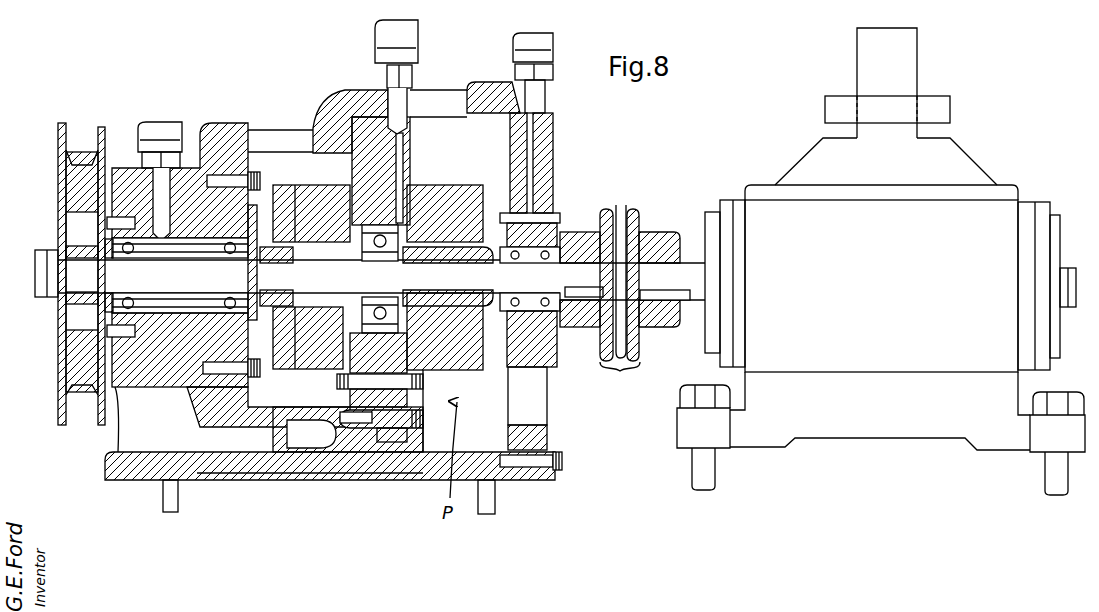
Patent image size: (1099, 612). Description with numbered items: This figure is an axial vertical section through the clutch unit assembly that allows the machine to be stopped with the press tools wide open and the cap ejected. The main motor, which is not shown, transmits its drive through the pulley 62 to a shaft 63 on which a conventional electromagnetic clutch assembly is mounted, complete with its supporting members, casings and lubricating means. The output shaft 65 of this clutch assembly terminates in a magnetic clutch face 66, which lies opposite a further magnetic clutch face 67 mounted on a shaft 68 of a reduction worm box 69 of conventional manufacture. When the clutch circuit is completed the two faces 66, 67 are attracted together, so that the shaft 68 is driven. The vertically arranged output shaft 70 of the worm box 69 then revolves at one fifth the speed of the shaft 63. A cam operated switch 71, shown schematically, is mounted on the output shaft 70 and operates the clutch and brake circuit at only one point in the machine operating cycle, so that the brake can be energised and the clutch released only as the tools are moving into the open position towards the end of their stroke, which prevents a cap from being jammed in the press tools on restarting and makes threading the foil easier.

The pulley 62 is at (64, 125).
The shaft 63 is at (191, 285).
The output shaft 65 is at (565, 273).
The magnetic clutch face 66 is at (617, 240).
The magnetic clutch face 67 is at (643, 242).
The shaft 68 is at (696, 300).
The reduction worm box 69 is at (1005, 213).
The output shaft 70 is at (917, 72).
The cam operated switch 71 is at (827, 113).